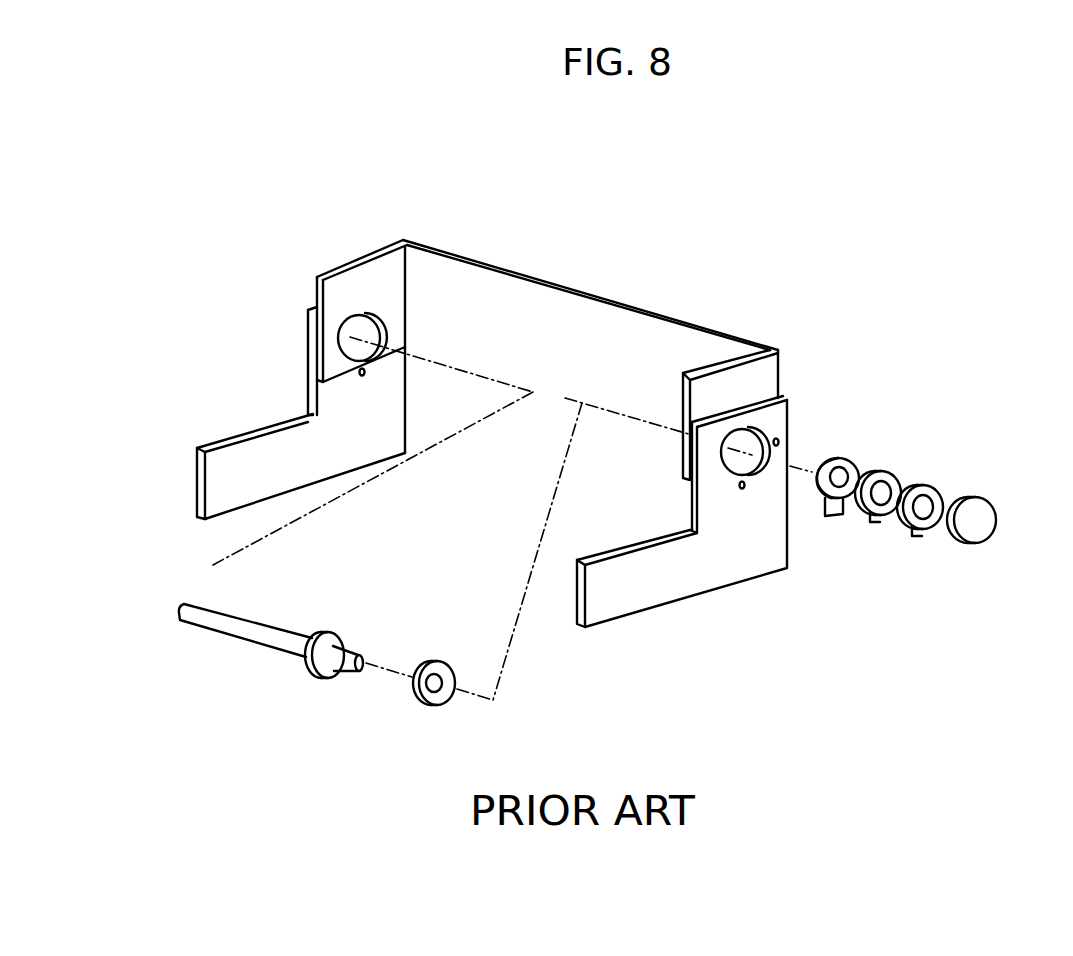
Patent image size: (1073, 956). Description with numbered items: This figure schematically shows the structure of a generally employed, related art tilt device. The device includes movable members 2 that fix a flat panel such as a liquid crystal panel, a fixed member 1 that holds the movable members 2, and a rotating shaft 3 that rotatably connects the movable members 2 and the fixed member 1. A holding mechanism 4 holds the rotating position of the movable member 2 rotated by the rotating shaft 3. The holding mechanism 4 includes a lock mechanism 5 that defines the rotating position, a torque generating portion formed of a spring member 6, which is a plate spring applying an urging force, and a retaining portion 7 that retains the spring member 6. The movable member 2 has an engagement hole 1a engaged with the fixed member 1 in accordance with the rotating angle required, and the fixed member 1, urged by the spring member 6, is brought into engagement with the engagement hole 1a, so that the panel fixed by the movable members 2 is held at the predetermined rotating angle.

The fixed member 1 is at (583, 290).
The engagement hole 1a is at (783, 441).
The movable member 2 is at (688, 580).
The rotating shaft 3 is at (340, 636).
The holding mechanism 4 is at (1006, 483).
The lock mechanism 5 is at (848, 521).
The spring member 6 is at (933, 540).
The retaining portion 7 is at (990, 529).